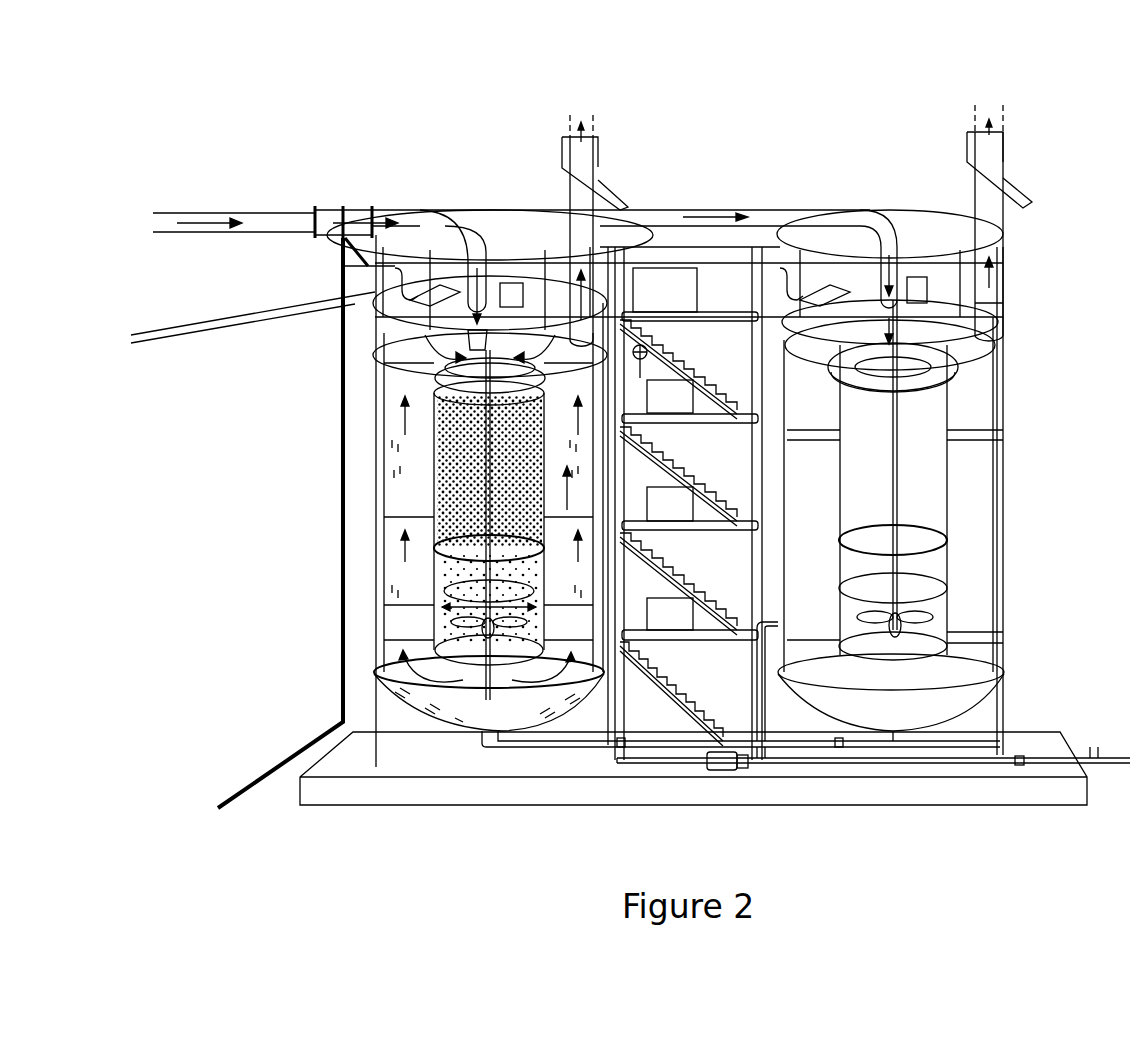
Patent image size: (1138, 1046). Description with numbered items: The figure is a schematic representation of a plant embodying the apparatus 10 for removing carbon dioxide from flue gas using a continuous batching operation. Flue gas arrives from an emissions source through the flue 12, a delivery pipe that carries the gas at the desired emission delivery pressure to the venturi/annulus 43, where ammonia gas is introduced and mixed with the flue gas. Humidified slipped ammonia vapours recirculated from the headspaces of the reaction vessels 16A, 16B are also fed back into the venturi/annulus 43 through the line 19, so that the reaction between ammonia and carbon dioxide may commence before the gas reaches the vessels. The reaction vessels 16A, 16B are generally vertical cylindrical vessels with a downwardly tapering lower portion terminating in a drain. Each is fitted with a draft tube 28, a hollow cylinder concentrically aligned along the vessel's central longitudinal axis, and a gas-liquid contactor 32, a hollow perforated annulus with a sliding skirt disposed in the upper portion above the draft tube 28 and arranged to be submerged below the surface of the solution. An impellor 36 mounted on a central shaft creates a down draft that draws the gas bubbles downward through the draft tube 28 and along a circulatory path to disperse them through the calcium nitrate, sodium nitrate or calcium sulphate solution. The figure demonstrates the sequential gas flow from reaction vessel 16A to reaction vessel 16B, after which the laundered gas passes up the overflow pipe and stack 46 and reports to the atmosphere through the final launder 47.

The apparatus 10 is at (807, 98).
The flue 12 is at (273, 222).
The venturi/annulus 43 is at (338, 206).
The line 19 is at (242, 792).
The reaction vessel 16A is at (405, 341).
The reaction vessel 16B is at (973, 398).
The gas-liquid contactor 32 is at (445, 372).
The draft tube 28 is at (469, 432).
The impellor 36 is at (487, 627).
The overflow pipe and stack 46 is at (578, 197).
The launder 47 is at (598, 168).